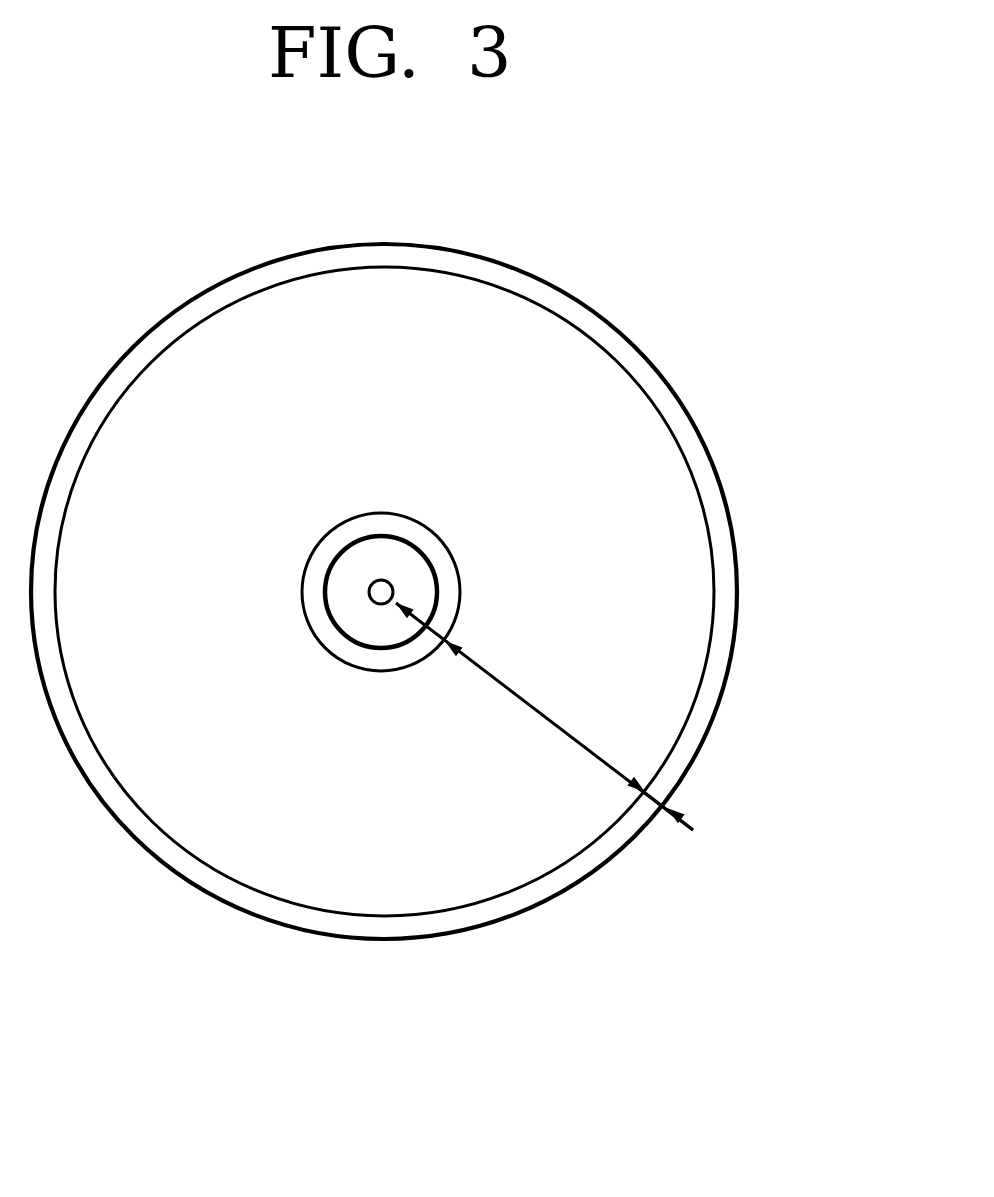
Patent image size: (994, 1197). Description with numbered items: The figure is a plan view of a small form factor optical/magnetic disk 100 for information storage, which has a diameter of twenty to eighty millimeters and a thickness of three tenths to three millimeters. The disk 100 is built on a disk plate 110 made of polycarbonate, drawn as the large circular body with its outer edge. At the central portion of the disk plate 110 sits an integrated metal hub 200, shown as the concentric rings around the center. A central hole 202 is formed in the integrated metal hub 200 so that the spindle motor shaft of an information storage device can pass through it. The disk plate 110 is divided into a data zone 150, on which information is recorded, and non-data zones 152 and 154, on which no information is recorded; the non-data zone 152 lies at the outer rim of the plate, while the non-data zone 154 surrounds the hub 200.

The small form factor optical/magnetic disk 100 is at (752, 337).
The disk plate 110 is at (168, 790).
The data zone 150 is at (553, 727).
The non-data zone 152 is at (647, 797).
The non-data zone 154 is at (427, 633).
The integrated metal hub 200 is at (343, 608).
The central hole 202 is at (373, 600).